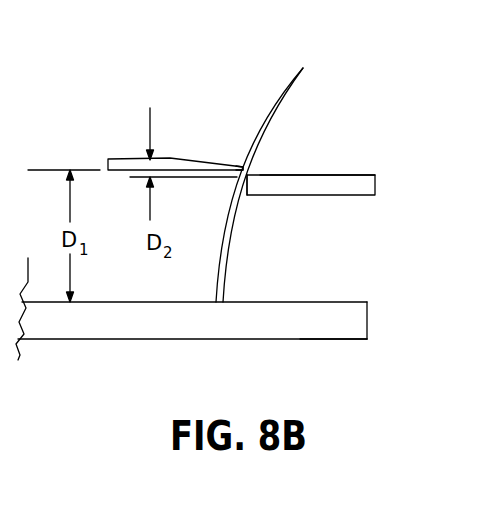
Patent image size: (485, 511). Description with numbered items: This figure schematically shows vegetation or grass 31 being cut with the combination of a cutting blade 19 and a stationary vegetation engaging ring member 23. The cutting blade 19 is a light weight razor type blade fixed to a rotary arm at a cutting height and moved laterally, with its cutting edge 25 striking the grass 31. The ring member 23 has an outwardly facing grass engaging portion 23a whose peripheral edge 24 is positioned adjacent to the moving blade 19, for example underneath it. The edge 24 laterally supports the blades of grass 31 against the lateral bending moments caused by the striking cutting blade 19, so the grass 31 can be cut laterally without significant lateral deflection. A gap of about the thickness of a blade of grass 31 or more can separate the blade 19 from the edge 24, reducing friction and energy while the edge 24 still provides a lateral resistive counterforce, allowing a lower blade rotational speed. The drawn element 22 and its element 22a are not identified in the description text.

The upper plate 19 is at (172, 148).
The tip of upper plate 25 is at (240, 167).
The curved blade 31 is at (302, 91).
The edge of guide plate 24 is at (252, 174).
The guide plate 23 is at (353, 204).
The upper surface of guide plate 23a is at (344, 175).
The base member 22 is at (362, 278).
The bottom surface of base member 22a is at (322, 340).